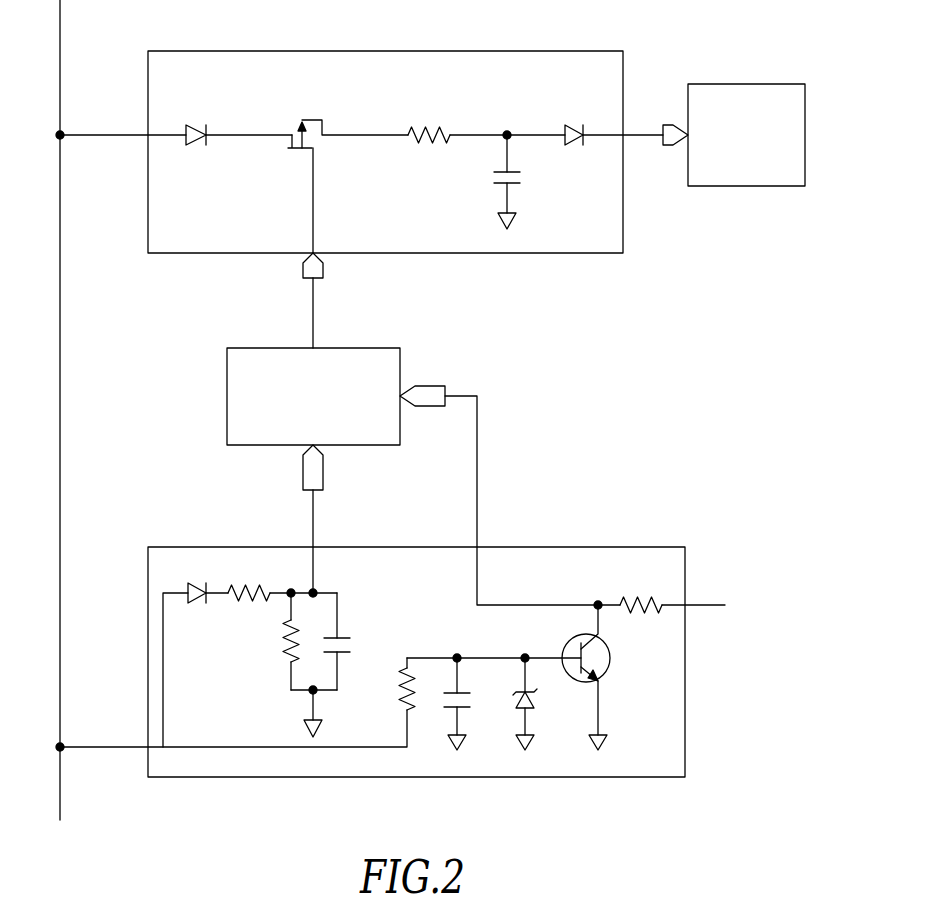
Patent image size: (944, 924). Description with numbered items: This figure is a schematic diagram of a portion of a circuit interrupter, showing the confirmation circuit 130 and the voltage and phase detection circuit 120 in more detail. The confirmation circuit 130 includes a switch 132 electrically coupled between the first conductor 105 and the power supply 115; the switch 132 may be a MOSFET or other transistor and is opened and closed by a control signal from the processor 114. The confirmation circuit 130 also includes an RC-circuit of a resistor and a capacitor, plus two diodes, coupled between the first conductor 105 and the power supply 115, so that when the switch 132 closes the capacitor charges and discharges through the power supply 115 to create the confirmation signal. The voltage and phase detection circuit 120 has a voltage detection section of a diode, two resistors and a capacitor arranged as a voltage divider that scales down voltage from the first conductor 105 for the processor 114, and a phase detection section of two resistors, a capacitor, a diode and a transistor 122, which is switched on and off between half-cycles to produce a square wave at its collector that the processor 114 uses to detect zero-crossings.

The first conductor 105 is at (60, 378).
The confirmation circuit 130 is at (405, 127).
The switch 132 is at (325, 96).
The power supply 115 is at (742, 84).
The processor 114 is at (250, 347).
The voltage and phase detection circuit 120 is at (414, 702).
The transistor 122 is at (614, 693).